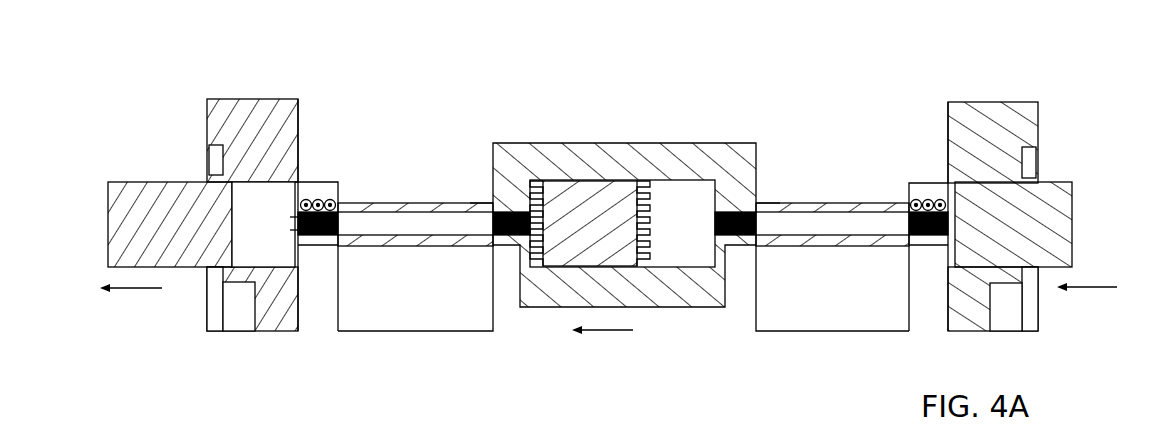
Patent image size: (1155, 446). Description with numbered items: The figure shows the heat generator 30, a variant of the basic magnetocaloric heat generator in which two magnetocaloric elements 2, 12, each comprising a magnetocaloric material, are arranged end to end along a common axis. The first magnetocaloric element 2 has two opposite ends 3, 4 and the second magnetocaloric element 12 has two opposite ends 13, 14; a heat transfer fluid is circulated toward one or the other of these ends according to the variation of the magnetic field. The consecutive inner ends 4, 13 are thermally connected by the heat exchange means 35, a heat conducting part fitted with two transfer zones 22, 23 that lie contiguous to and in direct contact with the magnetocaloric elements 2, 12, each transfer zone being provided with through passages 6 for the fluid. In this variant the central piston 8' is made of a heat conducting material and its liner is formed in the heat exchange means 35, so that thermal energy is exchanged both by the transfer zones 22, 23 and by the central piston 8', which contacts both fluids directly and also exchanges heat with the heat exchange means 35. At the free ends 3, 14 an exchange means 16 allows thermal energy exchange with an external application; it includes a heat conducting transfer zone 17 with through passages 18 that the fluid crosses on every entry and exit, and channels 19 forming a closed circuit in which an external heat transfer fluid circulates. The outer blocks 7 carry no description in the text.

The heat generator 30 is at (84, 113).
The shaft 7 is at (155, 194).
The transfer zone 17 is at (300, 263).
The exchange means 16 is at (325, 282).
The channels 19 is at (302, 198).
The end 3 is at (349, 203).
The end 14 is at (903, 210).
The through passages 18 is at (338, 247).
The magnetocaloric element 2 is at (395, 218).
The end 4 is at (478, 203).
The magnetocaloric element 12 is at (842, 203).
The end 13 is at (758, 214).
The transfer zone 22 is at (508, 270).
The transfer zone 23 is at (745, 265).
The heat exchange means 35 is at (680, 130).
The through passages 6 is at (513, 212).
The central piston 8' is at (590, 169).